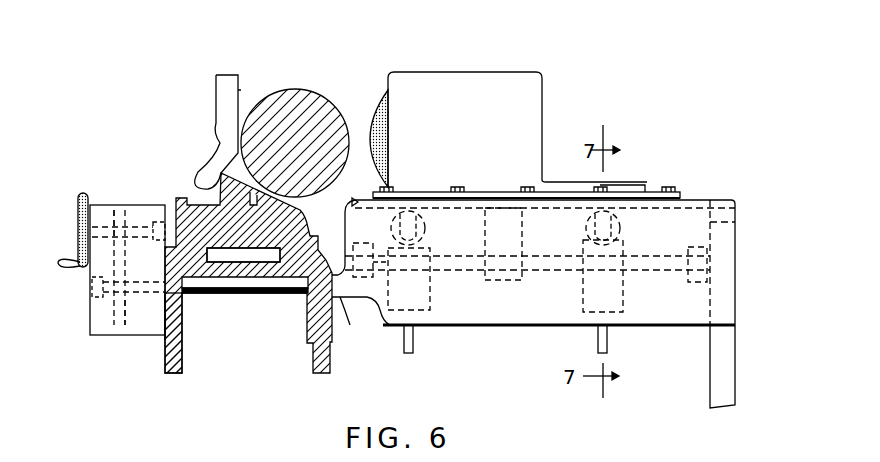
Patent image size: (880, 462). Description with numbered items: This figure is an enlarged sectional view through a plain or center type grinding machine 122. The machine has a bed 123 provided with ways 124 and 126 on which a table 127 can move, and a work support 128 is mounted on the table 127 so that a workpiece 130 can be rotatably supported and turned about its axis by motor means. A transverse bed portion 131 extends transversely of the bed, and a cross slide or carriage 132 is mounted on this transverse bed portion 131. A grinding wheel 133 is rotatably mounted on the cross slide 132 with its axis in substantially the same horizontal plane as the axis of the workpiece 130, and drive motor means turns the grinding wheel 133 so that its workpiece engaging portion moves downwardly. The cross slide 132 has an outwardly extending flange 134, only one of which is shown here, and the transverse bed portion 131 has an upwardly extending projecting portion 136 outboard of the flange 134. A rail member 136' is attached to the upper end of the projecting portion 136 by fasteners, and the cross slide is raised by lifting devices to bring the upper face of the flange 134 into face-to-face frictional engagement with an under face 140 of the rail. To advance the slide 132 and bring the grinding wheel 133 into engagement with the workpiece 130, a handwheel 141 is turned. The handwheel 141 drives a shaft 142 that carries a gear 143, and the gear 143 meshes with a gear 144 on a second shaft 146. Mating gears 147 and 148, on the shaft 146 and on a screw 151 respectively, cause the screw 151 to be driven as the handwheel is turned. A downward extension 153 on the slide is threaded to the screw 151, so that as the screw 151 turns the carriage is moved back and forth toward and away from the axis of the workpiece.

The grinding machine 122 is at (186, 143).
The bed 123 is at (180, 322).
The way 124 is at (206, 254).
The way 126 is at (287, 287).
The table 127 is at (193, 215).
The work support 128 is at (217, 102).
The workpiece 130 is at (292, 102).
The transverse bed portion 131 is at (646, 316).
The cross slide 132 is at (626, 191).
The grinding wheel 133 is at (373, 110).
The flange 134 is at (632, 210).
The projecting portion 136 is at (553, 192).
The rail member 136' is at (527, 169).
The under face 140 is at (628, 298).
The handwheel 141 is at (80, 212).
The shaft 142 is at (132, 269).
The gear 143 is at (113, 212).
The gear 144 is at (122, 325).
The shaft 146 is at (178, 320).
The gear 147 is at (378, 322).
The gear 148 is at (350, 206).
The screw 151 is at (545, 268).
The downward extension 153 is at (512, 242).